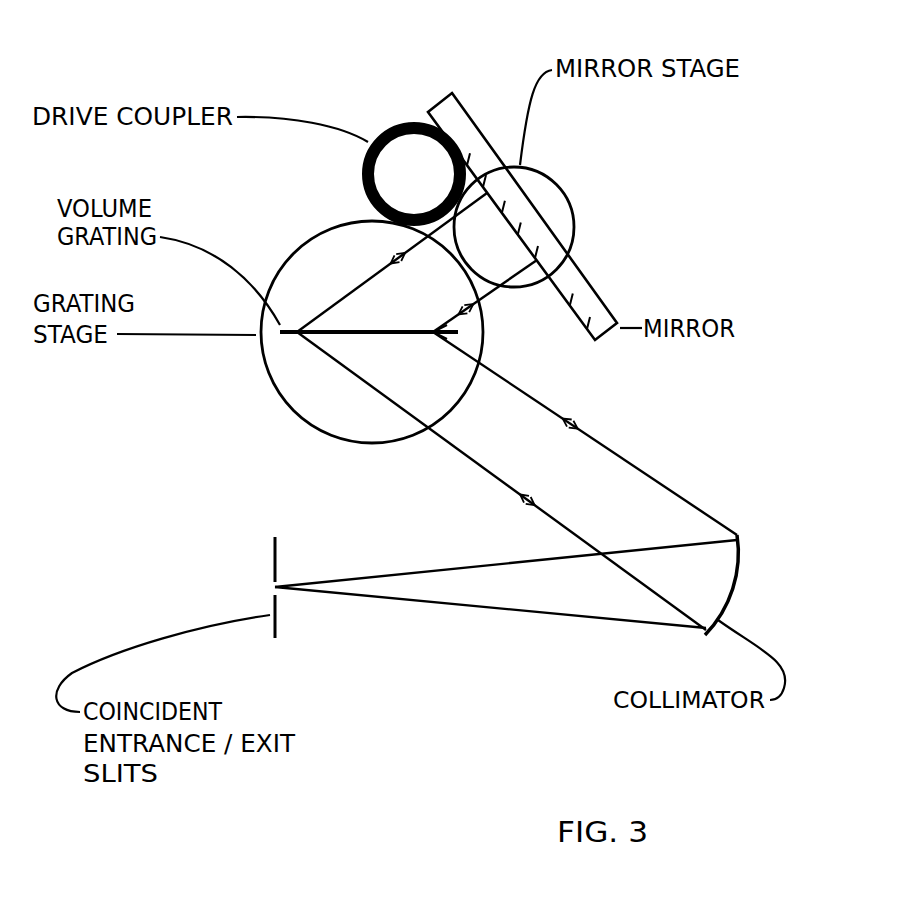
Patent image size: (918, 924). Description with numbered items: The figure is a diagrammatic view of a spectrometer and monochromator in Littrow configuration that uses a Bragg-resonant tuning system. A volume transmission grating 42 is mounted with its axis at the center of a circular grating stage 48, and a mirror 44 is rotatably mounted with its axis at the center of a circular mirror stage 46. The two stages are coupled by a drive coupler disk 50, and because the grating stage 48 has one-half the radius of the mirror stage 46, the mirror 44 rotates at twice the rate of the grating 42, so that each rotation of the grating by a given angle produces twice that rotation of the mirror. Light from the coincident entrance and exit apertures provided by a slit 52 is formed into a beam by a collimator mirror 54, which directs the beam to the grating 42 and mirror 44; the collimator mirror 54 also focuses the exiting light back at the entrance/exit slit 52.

The volume transmission grating 42 is at (463, 335).
The mirror 44 is at (590, 270).
The mirror stage 46 is at (540, 168).
The grating stage 48 is at (320, 440).
The drive coupler disk 50 is at (407, 120).
The slit 52 is at (275, 638).
The collimator mirror 54 is at (733, 588).